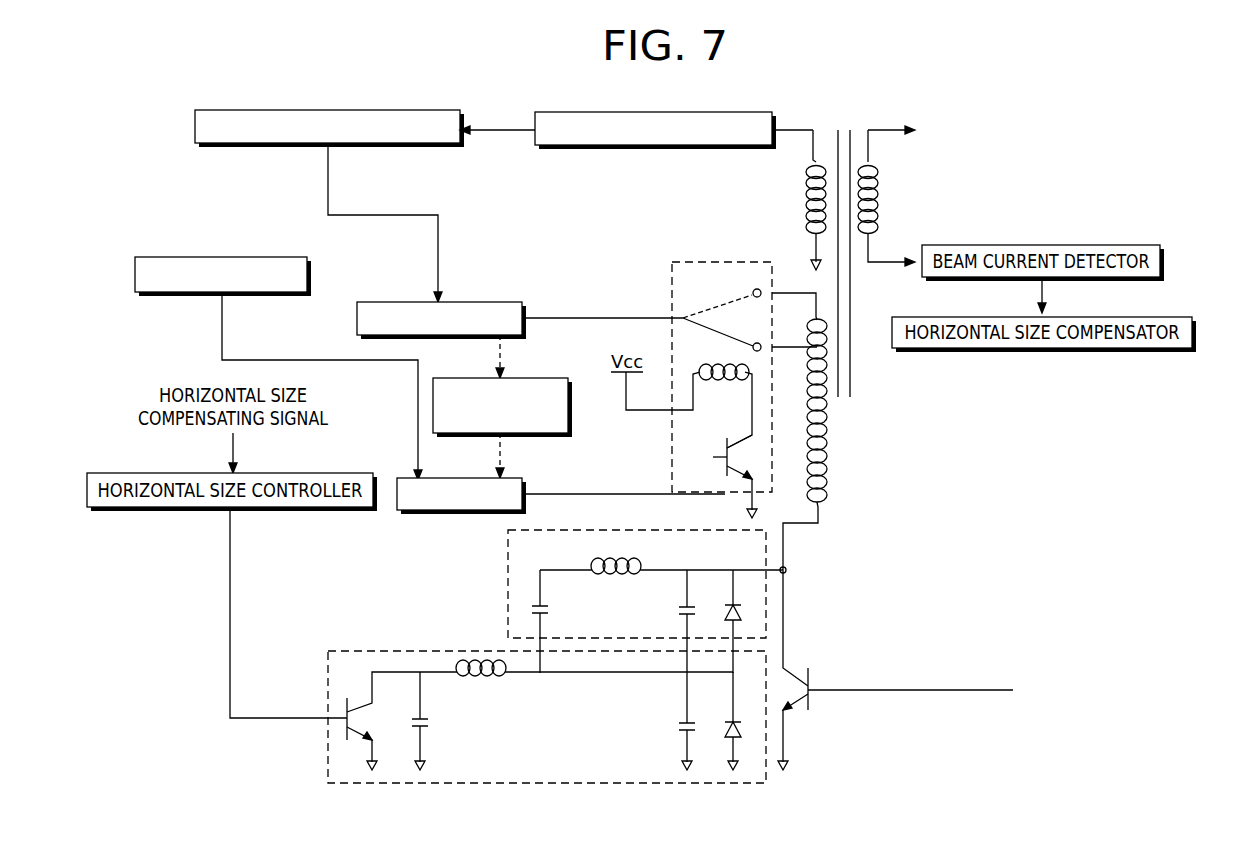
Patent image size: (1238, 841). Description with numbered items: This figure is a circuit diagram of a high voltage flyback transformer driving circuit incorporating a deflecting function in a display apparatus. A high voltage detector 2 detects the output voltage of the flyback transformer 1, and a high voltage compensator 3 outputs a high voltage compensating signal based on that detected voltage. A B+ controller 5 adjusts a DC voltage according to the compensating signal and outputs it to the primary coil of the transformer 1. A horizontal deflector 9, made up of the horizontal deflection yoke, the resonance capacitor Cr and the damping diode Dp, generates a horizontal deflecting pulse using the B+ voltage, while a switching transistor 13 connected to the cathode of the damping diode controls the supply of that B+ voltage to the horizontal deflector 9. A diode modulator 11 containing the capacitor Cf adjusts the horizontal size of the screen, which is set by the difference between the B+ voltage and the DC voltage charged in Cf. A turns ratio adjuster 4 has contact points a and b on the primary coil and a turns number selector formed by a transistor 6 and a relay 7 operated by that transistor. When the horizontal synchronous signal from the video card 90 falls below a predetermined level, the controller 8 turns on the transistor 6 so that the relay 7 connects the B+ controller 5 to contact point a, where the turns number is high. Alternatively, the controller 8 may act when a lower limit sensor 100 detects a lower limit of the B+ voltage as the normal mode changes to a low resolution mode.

The flyback transformer 1 is at (838, 130).
The high voltage detector 2 is at (664, 148).
The high voltage compensator 3 is at (195, 130).
The turns ratio adjuster 4 is at (672, 285).
The B+ controller 5 is at (357, 320).
The transistor 6 is at (737, 478).
The relay 7 is at (700, 320).
The controller 8 is at (430, 512).
The horizontal deflector 9 is at (508, 596).
The diode modulator 11 is at (328, 766).
The switching transistor 13 is at (793, 666).
The video card 90 is at (201, 257).
The lower limit sensor 100 is at (570, 415).